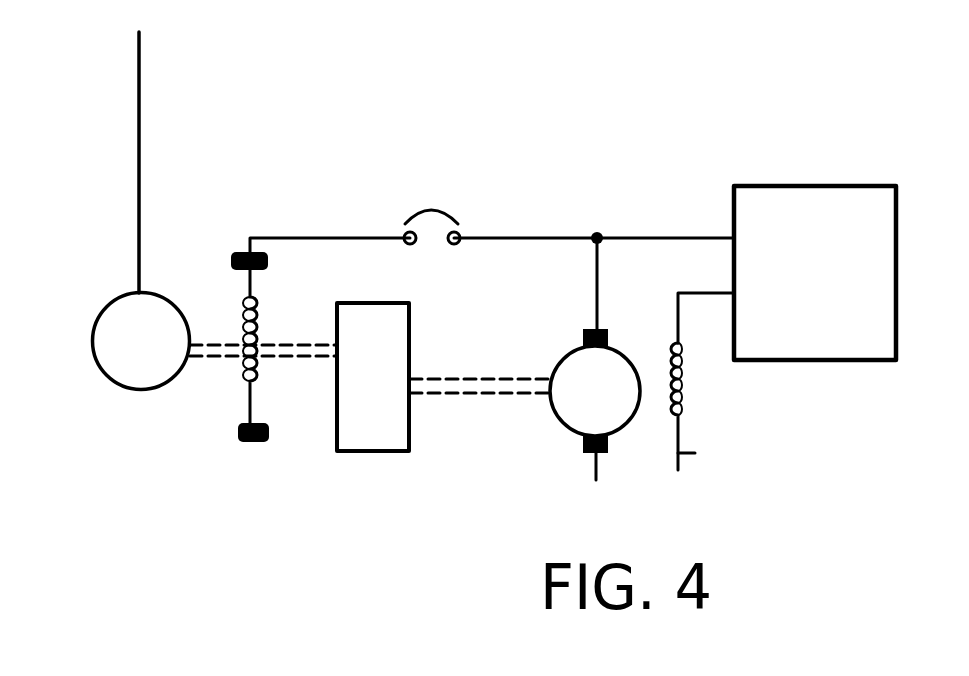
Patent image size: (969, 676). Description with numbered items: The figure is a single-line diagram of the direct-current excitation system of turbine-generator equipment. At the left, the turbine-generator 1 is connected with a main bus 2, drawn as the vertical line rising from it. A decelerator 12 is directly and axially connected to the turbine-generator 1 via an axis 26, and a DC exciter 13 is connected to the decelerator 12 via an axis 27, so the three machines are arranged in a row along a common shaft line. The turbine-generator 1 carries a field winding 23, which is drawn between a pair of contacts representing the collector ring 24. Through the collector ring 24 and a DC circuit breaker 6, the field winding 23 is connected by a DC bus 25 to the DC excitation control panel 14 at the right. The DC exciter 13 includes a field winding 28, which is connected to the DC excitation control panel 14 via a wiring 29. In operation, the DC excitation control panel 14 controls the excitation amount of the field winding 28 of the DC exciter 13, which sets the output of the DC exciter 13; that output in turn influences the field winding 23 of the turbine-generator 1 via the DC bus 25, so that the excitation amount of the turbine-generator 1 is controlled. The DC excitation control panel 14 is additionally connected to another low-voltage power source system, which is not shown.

The turbine-generator 1 is at (93, 330).
The main bus 2 is at (139, 125).
The DC circuit breaker 6 is at (430, 208).
The decelerator 12 is at (373, 453).
The DC exciter 13 is at (570, 437).
The DC excitation control panel 14 is at (793, 186).
The field winding 23 is at (242, 378).
The collector ring 24 is at (232, 252).
The DC bus 25 is at (316, 238).
The axis 26 is at (290, 360).
The axis 27 is at (470, 393).
The field winding 28 is at (688, 410).
The wiring 29 is at (706, 292).